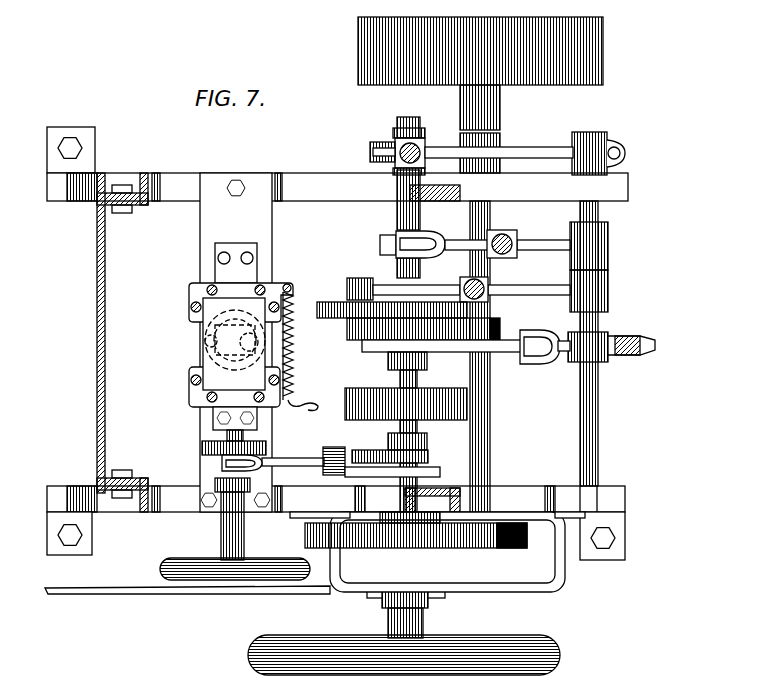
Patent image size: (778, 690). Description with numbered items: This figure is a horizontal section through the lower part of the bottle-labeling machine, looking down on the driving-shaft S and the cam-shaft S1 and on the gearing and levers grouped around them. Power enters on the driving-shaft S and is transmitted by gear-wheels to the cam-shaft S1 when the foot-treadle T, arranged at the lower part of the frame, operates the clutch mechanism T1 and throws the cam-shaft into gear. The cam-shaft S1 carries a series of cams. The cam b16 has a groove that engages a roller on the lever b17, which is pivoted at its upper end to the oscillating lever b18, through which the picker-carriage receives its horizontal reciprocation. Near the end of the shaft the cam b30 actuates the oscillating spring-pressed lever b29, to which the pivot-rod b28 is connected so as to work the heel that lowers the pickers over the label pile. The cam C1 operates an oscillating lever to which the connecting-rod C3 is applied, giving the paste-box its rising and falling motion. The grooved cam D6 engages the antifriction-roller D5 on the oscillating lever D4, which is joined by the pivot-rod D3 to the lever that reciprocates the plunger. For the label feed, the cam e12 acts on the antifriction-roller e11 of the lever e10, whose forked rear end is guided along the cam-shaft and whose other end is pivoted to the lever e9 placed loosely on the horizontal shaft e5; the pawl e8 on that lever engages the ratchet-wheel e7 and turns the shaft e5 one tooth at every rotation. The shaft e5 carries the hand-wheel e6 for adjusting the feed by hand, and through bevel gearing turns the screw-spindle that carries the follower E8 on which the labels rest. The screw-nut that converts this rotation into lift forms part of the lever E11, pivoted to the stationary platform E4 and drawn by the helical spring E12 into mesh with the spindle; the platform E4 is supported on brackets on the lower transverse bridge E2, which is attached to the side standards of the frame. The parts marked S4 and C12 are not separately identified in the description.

The lower transverse bridge E2 is at (218, 342).
The driving-shaft S is at (490, 430).
The secondary shaft S4 is at (418, 378).
The cam-shaft S1 is at (432, 621).
The pivot-rod b28 is at (420, 140).
The cam b30 is at (372, 153).
The oscillating spring-pressed lever b29 is at (532, 143).
The cam C1 is at (379, 245).
The rod C12 is at (458, 250).
The connecting-rod C3 is at (520, 227).
The antifriction-roller D5 is at (346, 290).
The oscillating lever D4 is at (528, 294).
The pivot-rod D3 is at (488, 300).
The cam D6 is at (392, 311).
The cam b16 is at (500, 326).
The lever b17 is at (380, 352).
The oscillating lever b18 is at (565, 384).
The cam e12 is at (427, 452).
The antifriction-roller e11 is at (362, 452).
The lever e10 is at (295, 462).
The stationary platform E4 is at (189, 303).
The follower E8 is at (210, 347).
The helical spring E12 is at (295, 346).
The lever E11 is at (302, 403).
The pawl e8 is at (227, 437).
The ratchet-wheel e7 is at (202, 449).
The lever e9 is at (231, 466).
The horizontal shaft e5 is at (221, 538).
The hand-wheel e6 is at (265, 570).
The foot-treadle T is at (179, 606).
The clutch mechanism T1 is at (436, 572).